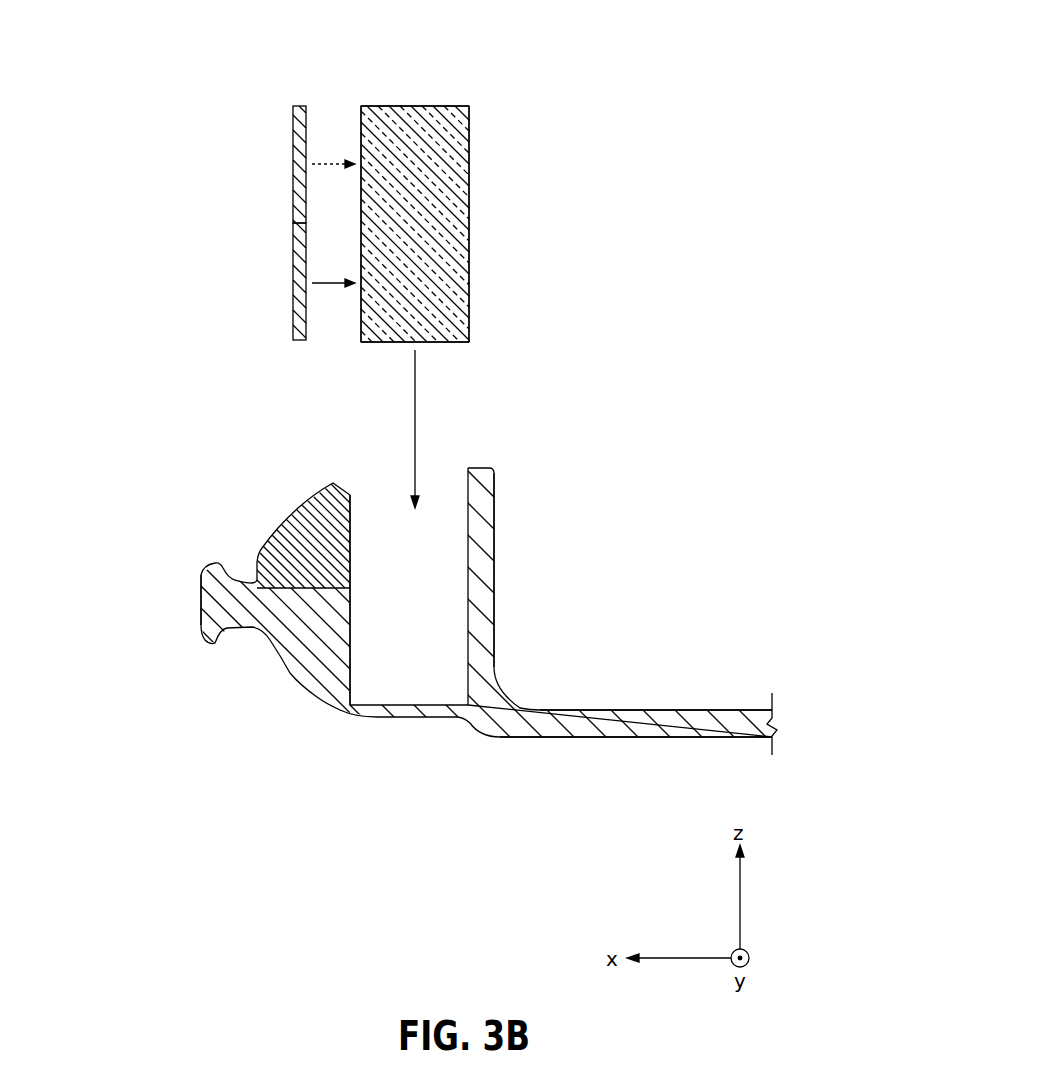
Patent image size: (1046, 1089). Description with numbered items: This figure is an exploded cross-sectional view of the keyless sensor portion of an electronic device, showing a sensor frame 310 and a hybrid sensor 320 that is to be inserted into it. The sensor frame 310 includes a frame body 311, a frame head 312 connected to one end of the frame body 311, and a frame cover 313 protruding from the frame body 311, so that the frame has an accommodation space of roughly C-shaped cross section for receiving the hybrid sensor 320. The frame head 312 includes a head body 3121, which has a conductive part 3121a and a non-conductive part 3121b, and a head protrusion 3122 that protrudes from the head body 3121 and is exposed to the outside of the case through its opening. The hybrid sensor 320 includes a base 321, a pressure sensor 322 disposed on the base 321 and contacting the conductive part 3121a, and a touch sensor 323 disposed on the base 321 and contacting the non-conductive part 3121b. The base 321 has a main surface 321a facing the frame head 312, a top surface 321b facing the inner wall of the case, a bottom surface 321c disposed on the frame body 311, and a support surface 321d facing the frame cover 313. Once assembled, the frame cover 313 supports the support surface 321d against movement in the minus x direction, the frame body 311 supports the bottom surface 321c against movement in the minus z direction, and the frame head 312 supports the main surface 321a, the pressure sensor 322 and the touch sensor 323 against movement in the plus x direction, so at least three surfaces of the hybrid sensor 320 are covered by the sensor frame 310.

The sensor frame 310 is at (446, 675).
The frame body 311 is at (645, 710).
The frame head 312 is at (232, 683).
The head body 3121 is at (260, 664).
The conductive part 3121a is at (322, 660).
The non-conductive part 3121b is at (280, 553).
The head protrusion 3122 is at (213, 630).
The frame cover 313 is at (485, 522).
The hybrid sensor 320 is at (453, 266).
The base 321 is at (440, 172).
The main surface 321a is at (360, 192).
The top surface 321b is at (417, 104).
The bottom surface 321c is at (440, 342).
The support surface 321d is at (470, 219).
The pressure sensor 322 is at (292, 282).
The touch sensor 323 is at (292, 163).